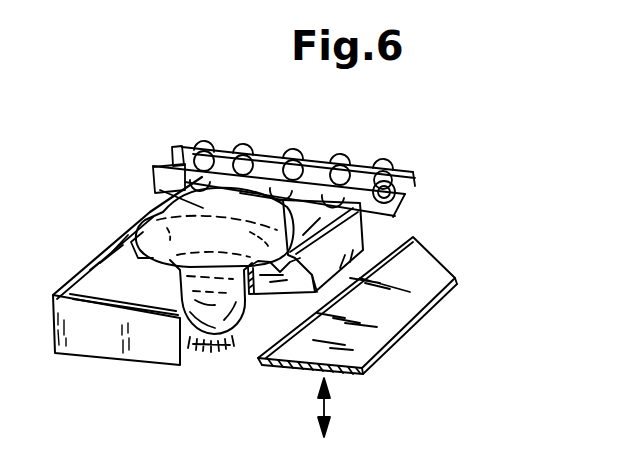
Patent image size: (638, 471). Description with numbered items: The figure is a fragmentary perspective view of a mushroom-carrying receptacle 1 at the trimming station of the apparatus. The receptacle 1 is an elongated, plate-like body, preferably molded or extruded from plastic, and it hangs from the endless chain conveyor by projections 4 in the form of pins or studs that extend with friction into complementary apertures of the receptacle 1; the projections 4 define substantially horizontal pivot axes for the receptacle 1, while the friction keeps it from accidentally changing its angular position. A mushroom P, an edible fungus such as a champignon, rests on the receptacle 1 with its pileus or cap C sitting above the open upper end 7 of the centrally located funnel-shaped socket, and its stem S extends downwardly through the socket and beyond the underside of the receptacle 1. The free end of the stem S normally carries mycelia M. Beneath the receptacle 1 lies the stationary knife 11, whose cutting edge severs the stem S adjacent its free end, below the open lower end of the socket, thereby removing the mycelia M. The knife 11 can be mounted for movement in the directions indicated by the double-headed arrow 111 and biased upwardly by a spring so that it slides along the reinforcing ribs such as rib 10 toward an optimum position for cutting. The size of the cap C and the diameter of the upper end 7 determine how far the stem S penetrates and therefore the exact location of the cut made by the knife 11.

The receptacle 1 is at (366, 236).
The projection 4 is at (298, 204).
The open upper end 7 is at (127, 232).
The rib 10 is at (270, 287).
The stationary knife 11 is at (377, 335).
The double-headed arrow 111 is at (325, 405).
The pileus C is at (175, 200).
The mushroom P is at (238, 208).
The stem S is at (212, 310).
The mycelia M is at (213, 347).